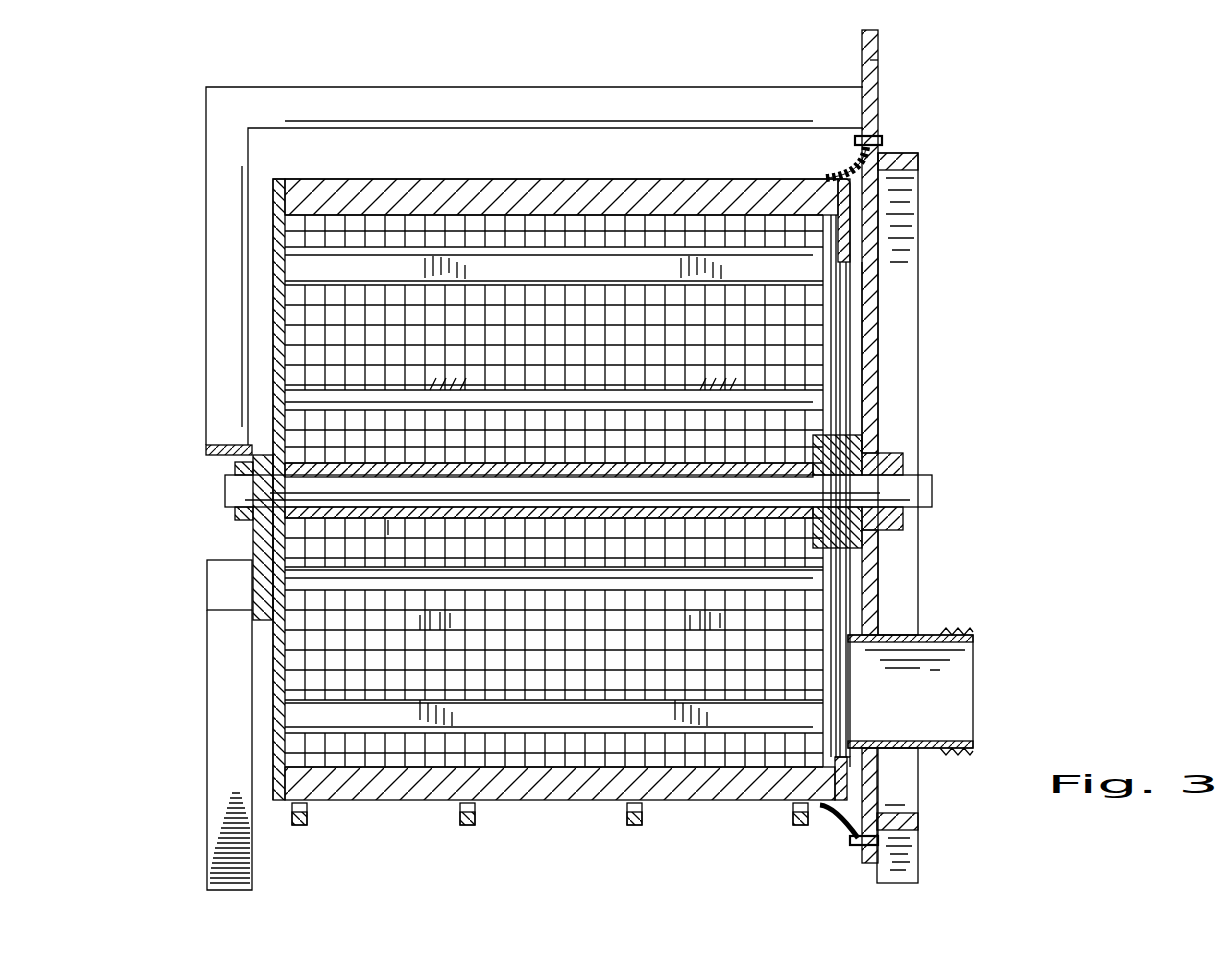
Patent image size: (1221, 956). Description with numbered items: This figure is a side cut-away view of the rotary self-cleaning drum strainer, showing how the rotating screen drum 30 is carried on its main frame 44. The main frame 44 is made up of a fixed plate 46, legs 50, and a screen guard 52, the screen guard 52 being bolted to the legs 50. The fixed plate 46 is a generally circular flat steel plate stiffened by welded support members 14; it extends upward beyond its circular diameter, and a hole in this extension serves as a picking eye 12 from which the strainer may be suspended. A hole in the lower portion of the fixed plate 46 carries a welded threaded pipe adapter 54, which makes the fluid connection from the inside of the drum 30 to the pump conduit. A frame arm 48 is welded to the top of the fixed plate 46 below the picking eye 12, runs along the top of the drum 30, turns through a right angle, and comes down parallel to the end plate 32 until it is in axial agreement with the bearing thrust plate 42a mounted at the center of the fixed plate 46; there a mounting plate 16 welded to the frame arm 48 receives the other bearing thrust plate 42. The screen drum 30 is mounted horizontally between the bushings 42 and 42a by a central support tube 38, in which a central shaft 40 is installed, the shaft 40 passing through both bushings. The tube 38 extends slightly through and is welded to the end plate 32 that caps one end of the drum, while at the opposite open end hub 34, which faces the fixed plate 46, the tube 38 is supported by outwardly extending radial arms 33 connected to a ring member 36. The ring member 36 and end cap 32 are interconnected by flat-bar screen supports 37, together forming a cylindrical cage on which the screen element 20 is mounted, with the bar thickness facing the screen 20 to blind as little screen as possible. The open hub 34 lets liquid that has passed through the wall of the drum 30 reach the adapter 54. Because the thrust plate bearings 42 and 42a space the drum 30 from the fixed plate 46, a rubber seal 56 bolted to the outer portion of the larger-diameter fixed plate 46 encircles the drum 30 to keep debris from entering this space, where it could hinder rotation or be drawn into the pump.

The picking eye 12 is at (868, 56).
The support members 14 is at (900, 315).
The mounting plate 16 is at (250, 537).
The screen element 20 is at (378, 305).
The screen drum 30 is at (314, 331).
The end plate 32 is at (285, 388).
The radial arms 33 is at (832, 587).
The open end hub 34 is at (845, 393).
The ring member 36 is at (847, 770).
The screen supports 37 is at (803, 265).
The central support tube 38 is at (388, 520).
The central shaft 40 is at (932, 493).
The bearing thrust plate 42 is at (240, 465).
The bearing thrust plate 42a is at (905, 462).
The main frame 44 is at (896, 102).
The fixed plate 46 is at (878, 348).
The frame arm 48 is at (562, 86).
The legs 50 is at (252, 862).
The screen guard 52 is at (642, 816).
The threaded pipe adapter 54 is at (975, 634).
The seal 56 is at (857, 141).